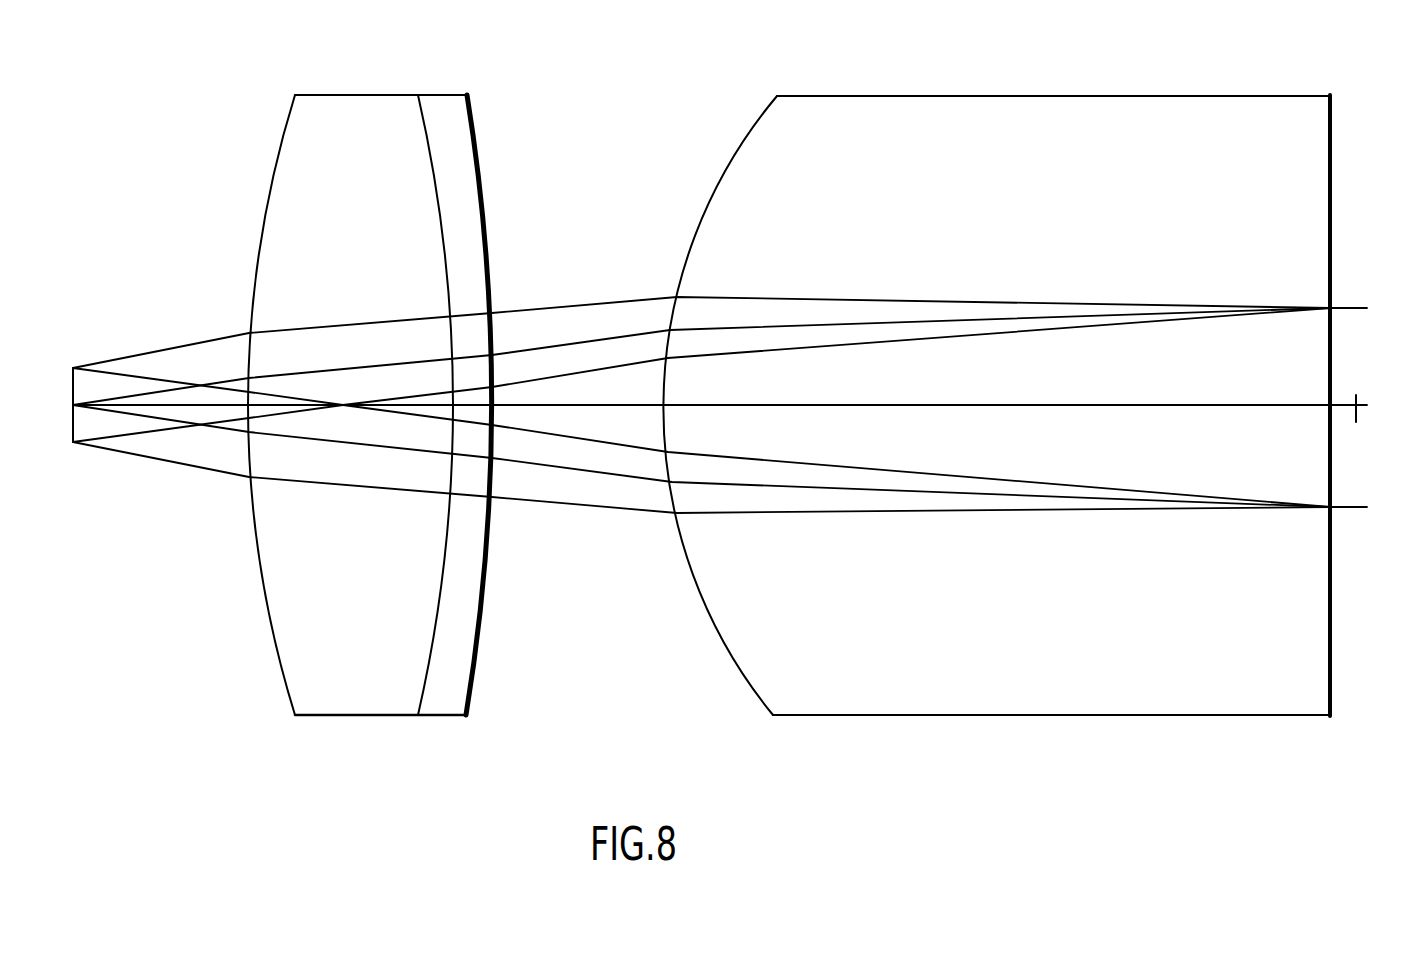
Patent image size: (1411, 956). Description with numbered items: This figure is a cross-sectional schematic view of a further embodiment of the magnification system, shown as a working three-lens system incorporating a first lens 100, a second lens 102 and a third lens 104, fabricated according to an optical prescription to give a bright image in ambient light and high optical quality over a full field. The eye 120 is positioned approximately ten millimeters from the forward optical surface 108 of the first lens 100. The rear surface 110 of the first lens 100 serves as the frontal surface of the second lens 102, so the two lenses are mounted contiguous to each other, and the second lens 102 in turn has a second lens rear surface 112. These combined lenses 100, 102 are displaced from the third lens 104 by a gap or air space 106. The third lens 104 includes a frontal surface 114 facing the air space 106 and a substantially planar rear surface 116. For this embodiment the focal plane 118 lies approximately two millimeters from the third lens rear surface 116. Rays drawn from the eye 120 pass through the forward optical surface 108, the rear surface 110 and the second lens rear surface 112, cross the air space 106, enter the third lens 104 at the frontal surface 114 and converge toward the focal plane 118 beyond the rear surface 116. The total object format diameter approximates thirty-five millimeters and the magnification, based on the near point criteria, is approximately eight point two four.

The first lens 100 is at (371, 400).
The second lens 102 is at (516, 372).
The third lens 104 is at (1028, 388).
The gap or air space 106 is at (626, 250).
The forward optical surface 108 is at (265, 598).
The rear surface 110 is at (427, 685).
The second lens rear surface 112 is at (475, 668).
The frontal surface 114 is at (752, 687).
The rear surface 116 is at (1331, 572).
The focal plane 118 is at (1360, 405).
The eye 120 is at (70, 412).